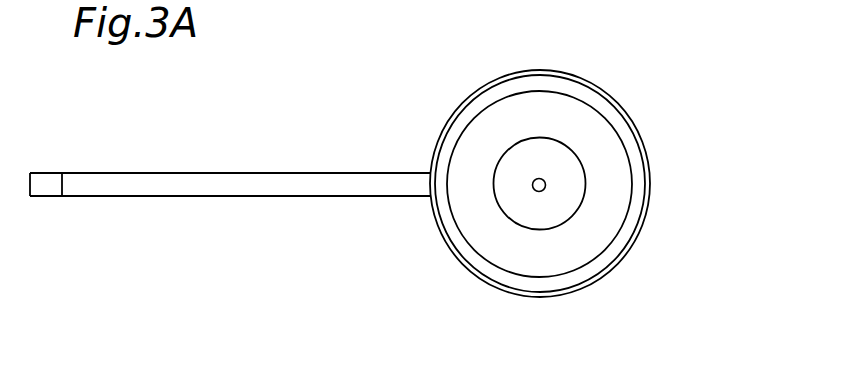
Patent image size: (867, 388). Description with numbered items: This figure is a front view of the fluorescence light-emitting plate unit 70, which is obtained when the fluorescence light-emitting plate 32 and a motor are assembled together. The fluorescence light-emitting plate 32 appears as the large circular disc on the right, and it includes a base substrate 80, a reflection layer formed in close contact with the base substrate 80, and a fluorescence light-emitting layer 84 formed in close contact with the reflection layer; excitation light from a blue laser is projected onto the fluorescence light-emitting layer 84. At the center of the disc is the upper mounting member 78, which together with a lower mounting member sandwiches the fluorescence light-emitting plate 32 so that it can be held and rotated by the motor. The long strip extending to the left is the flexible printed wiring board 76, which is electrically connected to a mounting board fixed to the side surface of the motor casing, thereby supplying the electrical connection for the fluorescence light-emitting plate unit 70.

The fluorescence light-emitting plate 32 is at (660, 139).
The fluorescence light-emitting plate unit 70 is at (387, 178).
The flexible printed wiring board 76 is at (396, 191).
The upper mounting member 78 is at (513, 168).
The base substrate 80 is at (612, 120).
The fluorescence light-emitting layer 84 is at (636, 192).